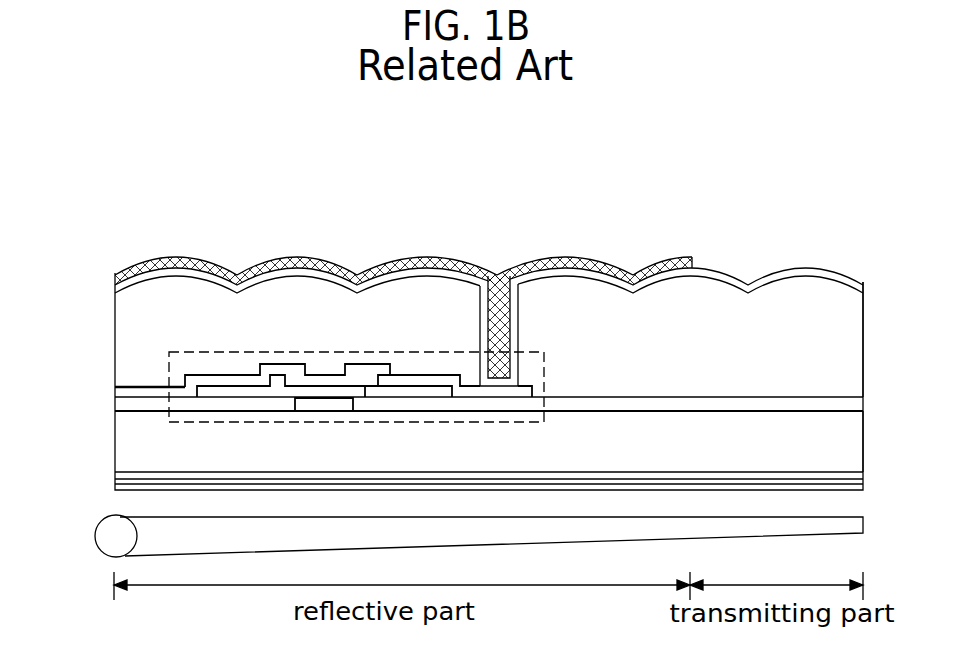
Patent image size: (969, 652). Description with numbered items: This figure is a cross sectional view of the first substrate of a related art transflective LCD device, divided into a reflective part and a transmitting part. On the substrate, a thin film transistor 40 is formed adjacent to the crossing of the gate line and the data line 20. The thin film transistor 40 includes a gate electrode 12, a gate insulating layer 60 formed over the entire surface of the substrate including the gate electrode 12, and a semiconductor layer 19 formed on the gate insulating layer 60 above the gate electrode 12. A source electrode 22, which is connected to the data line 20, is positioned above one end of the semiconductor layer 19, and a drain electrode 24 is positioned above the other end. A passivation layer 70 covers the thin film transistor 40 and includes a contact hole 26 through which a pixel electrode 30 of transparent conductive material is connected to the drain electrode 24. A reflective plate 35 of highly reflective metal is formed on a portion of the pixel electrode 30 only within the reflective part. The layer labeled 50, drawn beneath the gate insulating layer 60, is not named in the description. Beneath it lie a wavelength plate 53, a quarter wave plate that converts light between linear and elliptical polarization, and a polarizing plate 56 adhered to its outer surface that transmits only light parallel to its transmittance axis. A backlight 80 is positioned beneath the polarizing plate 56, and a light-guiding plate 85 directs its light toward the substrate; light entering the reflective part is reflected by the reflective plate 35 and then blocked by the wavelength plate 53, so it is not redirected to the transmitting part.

The gate electrode 12 is at (325, 408).
The semiconductor layer 19 is at (396, 392).
The data line 20 is at (115, 389).
The source electrode 22 is at (281, 370).
The drain electrode 24 is at (363, 370).
The contact hole 26 is at (500, 276).
The pixel electrode 30 is at (583, 274).
The reflective plate 35 is at (431, 259).
The thin film transistor 40 is at (170, 413).
The lower substrate 50 is at (863, 440).
The wavelength plate 53 is at (863, 478).
The polarizing plate 56 is at (863, 486).
The gate insulating layer 60 is at (855, 409).
The passivation layer 70 is at (855, 347).
The backlight 80 is at (95, 537).
The light-guiding plate 85 is at (863, 521).